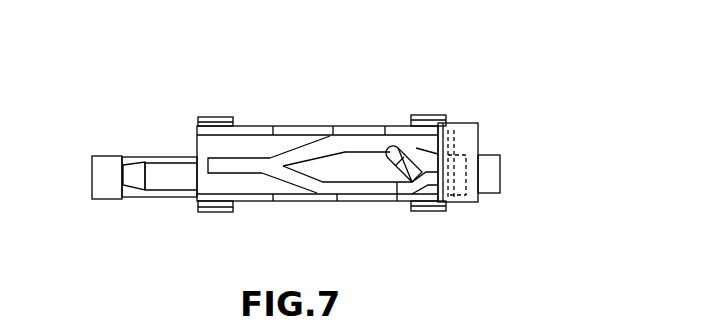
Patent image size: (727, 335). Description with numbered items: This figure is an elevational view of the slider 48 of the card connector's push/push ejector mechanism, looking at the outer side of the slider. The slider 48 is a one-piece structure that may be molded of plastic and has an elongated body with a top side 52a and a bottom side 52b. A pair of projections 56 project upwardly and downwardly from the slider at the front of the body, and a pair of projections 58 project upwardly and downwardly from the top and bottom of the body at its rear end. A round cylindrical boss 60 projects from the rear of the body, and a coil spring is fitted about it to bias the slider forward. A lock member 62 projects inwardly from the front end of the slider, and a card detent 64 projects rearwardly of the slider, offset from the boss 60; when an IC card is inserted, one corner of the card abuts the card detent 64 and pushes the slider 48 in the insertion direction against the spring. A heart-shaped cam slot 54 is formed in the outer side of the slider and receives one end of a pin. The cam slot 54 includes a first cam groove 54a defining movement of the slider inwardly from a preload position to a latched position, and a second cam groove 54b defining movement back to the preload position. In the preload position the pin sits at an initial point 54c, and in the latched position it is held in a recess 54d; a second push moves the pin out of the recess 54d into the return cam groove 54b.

The slider 48 is at (392, 262).
The top side 52a is at (346, 127).
The bottom side 52b is at (303, 203).
The cam slot 54 is at (352, 145).
The first cam groove 54a is at (333, 143).
The second cam groove 54b is at (318, 190).
The initial point 54c is at (217, 168).
The recess 54d is at (398, 157).
The projections 56 is at (436, 116).
The projections 58 is at (213, 117).
The boss 60 is at (168, 180).
The lock member 62 is at (487, 153).
The card detent 64 is at (108, 157).